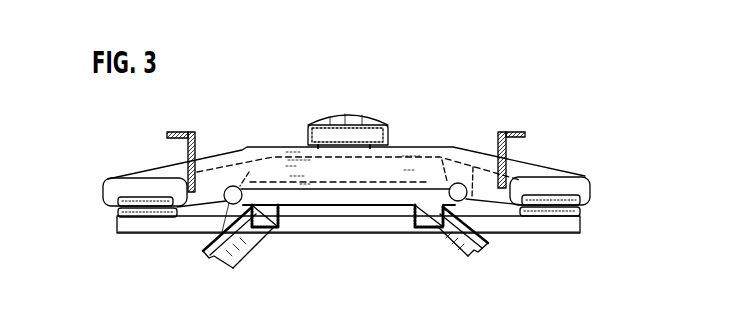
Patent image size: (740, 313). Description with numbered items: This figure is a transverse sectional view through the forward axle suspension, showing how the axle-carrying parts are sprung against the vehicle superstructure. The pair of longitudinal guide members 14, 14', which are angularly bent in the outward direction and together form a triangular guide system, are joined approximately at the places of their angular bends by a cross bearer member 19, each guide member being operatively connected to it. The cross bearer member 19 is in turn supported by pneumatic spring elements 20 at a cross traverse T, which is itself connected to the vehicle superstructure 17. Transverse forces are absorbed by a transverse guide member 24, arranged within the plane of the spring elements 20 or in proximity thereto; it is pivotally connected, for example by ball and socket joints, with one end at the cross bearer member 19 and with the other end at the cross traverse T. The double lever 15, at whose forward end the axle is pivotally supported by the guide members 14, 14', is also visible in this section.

The cross traverse T is at (463, 156).
The vehicle superstructure 17 is at (184, 131).
The double lever 15 is at (390, 131).
The pneumatic spring elements 20 is at (117, 213).
The transverse guide member 24 is at (323, 197).
The cross bearer member 19 is at (375, 228).
The longitudinal guide member 14 is at (451, 250).
The longitudinal guide member 14' is at (240, 249).